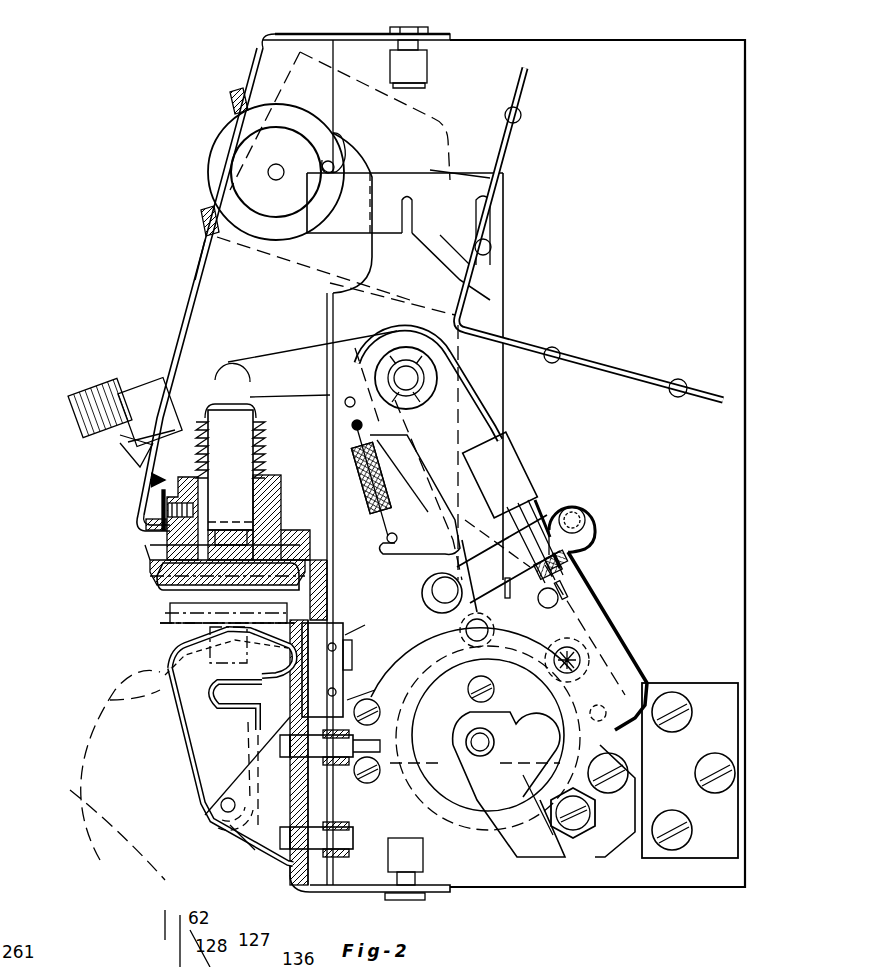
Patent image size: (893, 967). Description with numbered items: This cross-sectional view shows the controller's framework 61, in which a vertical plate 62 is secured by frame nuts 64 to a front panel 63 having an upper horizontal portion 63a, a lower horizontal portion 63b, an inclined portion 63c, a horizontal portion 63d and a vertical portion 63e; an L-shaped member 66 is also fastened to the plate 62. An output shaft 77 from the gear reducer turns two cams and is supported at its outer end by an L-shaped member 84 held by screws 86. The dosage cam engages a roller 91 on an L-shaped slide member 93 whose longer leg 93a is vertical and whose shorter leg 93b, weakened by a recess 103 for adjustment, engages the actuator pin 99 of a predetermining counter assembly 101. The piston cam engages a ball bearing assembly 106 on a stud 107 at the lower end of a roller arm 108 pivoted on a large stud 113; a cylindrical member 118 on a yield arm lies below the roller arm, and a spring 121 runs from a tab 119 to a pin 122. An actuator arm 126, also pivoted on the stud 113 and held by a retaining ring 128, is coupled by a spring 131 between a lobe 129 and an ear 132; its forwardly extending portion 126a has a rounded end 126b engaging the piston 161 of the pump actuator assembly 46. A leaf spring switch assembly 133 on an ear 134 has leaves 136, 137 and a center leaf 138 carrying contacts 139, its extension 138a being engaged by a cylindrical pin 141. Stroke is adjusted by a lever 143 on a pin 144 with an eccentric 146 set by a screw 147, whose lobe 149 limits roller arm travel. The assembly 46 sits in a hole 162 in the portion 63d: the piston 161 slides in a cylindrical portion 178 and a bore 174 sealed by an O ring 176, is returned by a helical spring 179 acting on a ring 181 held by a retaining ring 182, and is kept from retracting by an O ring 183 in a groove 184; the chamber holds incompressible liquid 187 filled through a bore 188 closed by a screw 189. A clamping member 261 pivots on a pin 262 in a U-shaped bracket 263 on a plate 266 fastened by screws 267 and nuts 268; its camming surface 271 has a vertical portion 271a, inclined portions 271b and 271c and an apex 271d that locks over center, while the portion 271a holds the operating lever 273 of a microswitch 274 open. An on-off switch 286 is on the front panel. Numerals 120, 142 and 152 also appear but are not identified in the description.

The framework 61 is at (604, 30).
The vertical plate 62 is at (738, 105).
The front panel 63 is at (178, 295).
The upper horizontal portion 63a is at (386, 36).
The lower horizontal portion 63b is at (340, 890).
The inclined portion 63c is at (185, 305).
The horizontal portion 63d is at (140, 535).
The vertical portion 63e is at (293, 878).
The frame nuts 64 is at (420, 30).
The L-shaped member 66 is at (603, 367).
The output shaft 77 is at (478, 742).
The L-shaped member 84 is at (665, 880).
The screws 86 is at (700, 822).
The roller 91 is at (445, 642).
The slide member 93 is at (505, 277).
The longer leg 93a is at (490, 398).
The shorter leg 93b is at (345, 216).
The actuator pin 99 is at (330, 158).
The predetermining counter assembly 101 is at (215, 128).
The recess 103 is at (410, 237).
The ball bearing assembly 106 is at (618, 656).
The stud 107 is at (573, 652).
The roller arm 108 is at (612, 642).
The large stud 113 is at (402, 372).
The cylindrical member 118 is at (468, 618).
The tab 119 is at (425, 600).
The pivot 120 is at (586, 514).
The spring 121 is at (521, 595).
The pin 122 is at (580, 506).
The actuator arm 126 is at (447, 392).
The forwardly extending portion 126a is at (292, 360).
The outer rounded end 126b is at (228, 347).
The retaining ring 128 is at (350, 396).
The lobe 129 is at (356, 418).
The spring 131 is at (366, 482).
The ear 132 is at (380, 546).
The leaf spring switch assembly 133 is at (512, 455).
The outwardly extending ear 134 is at (530, 478).
The leaf 136 is at (512, 522).
The leaf 137 is at (546, 508).
The center leaf 138 is at (522, 546).
The slide end 138a is at (567, 590).
The contacts 139 is at (562, 556).
The cylindrical pin 141 is at (560, 602).
The screw 142 is at (622, 768).
The lever 143 is at (545, 870).
The pin 144 is at (540, 805).
The eccentric 146 is at (605, 862).
The screw 147 is at (578, 840).
The lobe 149 is at (532, 726).
The screw 152 is at (469, 690).
The piston 161 is at (148, 479).
The hole 162 is at (292, 526).
The bore 174 is at (160, 585).
The O ring 176 is at (200, 624).
The cylindrical portion 178 is at (200, 436).
The helical spring 179 is at (263, 442).
The ring 181 is at (195, 420).
The retaining ring 182 is at (205, 418).
The O ring 183 is at (225, 520).
The annular groove 184 is at (205, 598).
The incompressible liquid 187 is at (272, 480).
The bore 188 is at (155, 565).
The screw 189 is at (160, 510).
The pump actuator assembly 46 is at (168, 482).
The clamping member 261 is at (186, 752).
The pin 262 is at (222, 804).
The U-shaped bracket 263 is at (238, 840).
The plate 266 is at (298, 892).
The screws 267 is at (285, 745).
The nuts 268 is at (343, 835).
The camming surface 271 is at (172, 688).
The vertical portion 271a is at (292, 670).
The inclined surface portion 271b is at (340, 570).
The inclined portion 271c is at (168, 655).
The apex 271d is at (227, 650).
The operating lever 273 is at (345, 626).
The microswitch 274 is at (350, 648).
The on-off switch 286 is at (95, 380).